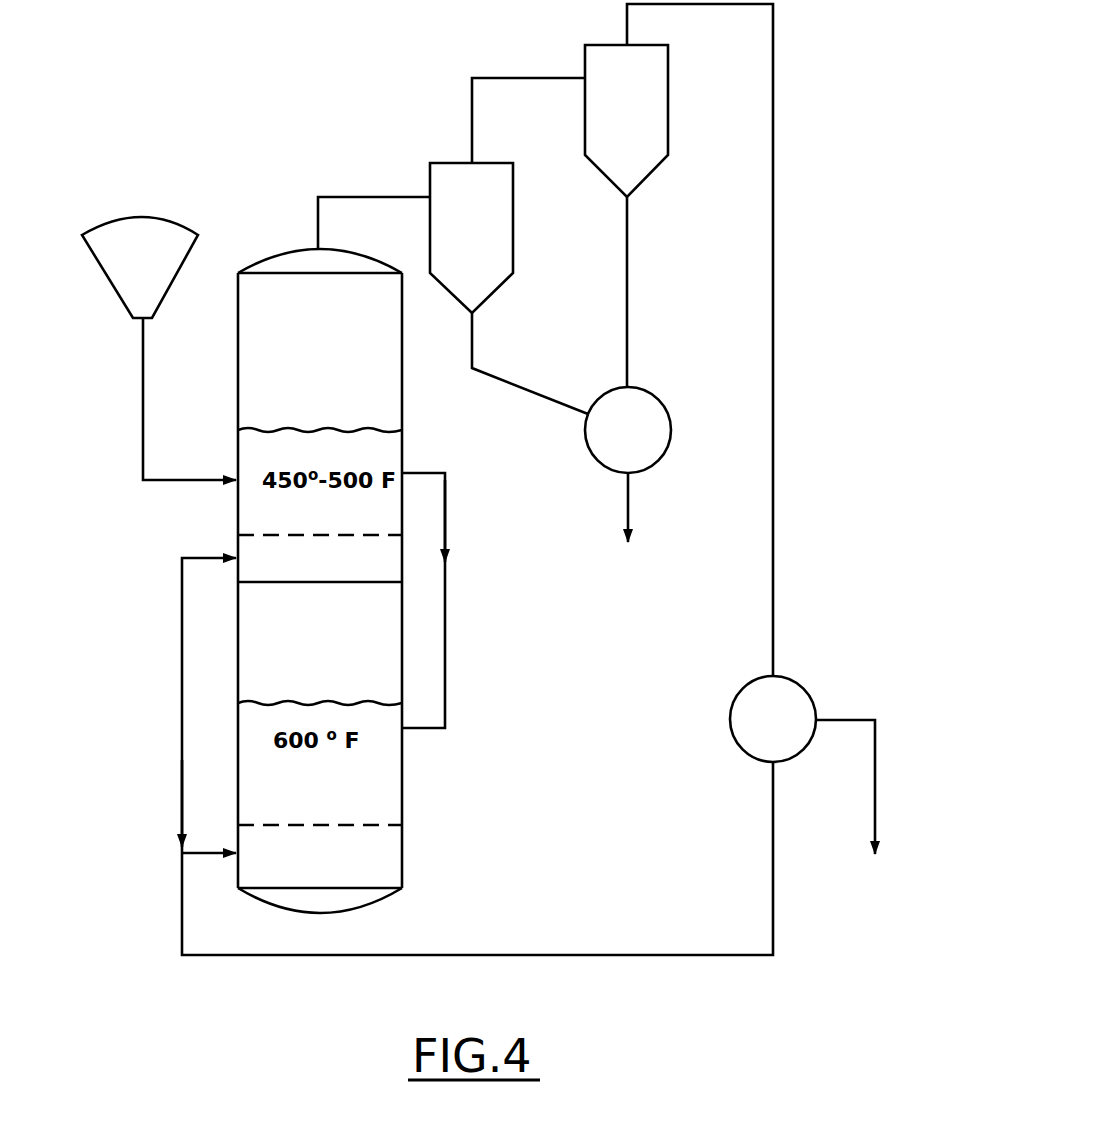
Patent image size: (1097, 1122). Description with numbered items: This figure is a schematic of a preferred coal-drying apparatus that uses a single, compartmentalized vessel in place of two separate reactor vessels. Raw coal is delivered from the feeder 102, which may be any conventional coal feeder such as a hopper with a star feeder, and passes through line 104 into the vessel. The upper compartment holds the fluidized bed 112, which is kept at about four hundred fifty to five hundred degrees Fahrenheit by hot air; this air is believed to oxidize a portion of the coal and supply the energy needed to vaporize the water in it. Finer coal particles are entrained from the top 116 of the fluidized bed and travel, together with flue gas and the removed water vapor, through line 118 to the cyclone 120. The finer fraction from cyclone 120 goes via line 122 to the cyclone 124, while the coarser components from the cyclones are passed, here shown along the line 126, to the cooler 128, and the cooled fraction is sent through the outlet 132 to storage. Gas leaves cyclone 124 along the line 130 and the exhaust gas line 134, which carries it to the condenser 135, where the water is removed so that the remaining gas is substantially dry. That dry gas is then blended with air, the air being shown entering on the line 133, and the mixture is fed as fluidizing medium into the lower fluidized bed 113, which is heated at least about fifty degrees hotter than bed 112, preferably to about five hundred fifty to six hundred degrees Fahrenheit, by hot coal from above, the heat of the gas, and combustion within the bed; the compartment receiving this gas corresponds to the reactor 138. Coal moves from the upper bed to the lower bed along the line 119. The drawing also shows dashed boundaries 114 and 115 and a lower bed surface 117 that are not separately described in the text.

The feeder 102 is at (163, 300).
The line 104 is at (145, 433).
The fluidized bed 112 is at (320, 558).
The fluidized bed 113 is at (320, 856).
The upper distribution plate 114 is at (312, 535).
The lower distribution plate 115 is at (305, 825).
The top of the fluidized bed 116 is at (282, 433).
The lower bed level 117 is at (270, 702).
The line 118 is at (472, 125).
The recycle line 119 is at (445, 642).
The cyclone 120 is at (471, 238).
The line 122 is at (537, 78).
The cyclone 124 is at (668, 80).
The solids return line 126 is at (497, 370).
The cooler 128 is at (667, 407).
The gas outlet line 130 is at (628, 248).
The storage 132 is at (630, 503).
The air supply line 133 is at (180, 728).
The line 134 is at (180, 892).
The condenser 135 is at (728, 730).
The reactor 138 is at (873, 765).